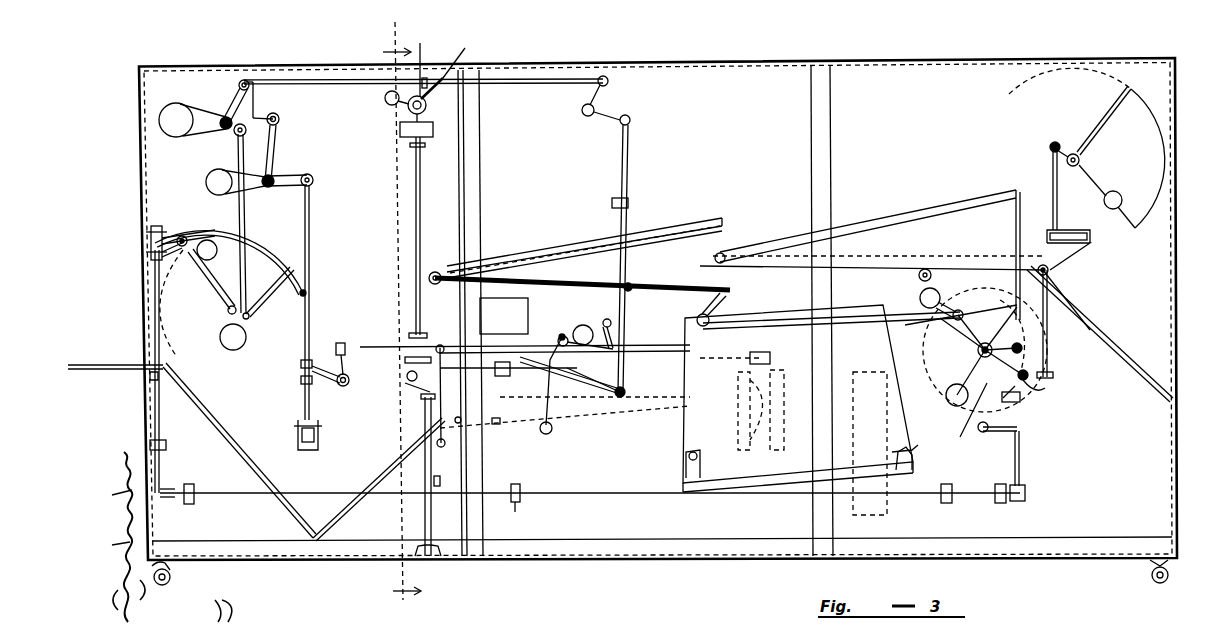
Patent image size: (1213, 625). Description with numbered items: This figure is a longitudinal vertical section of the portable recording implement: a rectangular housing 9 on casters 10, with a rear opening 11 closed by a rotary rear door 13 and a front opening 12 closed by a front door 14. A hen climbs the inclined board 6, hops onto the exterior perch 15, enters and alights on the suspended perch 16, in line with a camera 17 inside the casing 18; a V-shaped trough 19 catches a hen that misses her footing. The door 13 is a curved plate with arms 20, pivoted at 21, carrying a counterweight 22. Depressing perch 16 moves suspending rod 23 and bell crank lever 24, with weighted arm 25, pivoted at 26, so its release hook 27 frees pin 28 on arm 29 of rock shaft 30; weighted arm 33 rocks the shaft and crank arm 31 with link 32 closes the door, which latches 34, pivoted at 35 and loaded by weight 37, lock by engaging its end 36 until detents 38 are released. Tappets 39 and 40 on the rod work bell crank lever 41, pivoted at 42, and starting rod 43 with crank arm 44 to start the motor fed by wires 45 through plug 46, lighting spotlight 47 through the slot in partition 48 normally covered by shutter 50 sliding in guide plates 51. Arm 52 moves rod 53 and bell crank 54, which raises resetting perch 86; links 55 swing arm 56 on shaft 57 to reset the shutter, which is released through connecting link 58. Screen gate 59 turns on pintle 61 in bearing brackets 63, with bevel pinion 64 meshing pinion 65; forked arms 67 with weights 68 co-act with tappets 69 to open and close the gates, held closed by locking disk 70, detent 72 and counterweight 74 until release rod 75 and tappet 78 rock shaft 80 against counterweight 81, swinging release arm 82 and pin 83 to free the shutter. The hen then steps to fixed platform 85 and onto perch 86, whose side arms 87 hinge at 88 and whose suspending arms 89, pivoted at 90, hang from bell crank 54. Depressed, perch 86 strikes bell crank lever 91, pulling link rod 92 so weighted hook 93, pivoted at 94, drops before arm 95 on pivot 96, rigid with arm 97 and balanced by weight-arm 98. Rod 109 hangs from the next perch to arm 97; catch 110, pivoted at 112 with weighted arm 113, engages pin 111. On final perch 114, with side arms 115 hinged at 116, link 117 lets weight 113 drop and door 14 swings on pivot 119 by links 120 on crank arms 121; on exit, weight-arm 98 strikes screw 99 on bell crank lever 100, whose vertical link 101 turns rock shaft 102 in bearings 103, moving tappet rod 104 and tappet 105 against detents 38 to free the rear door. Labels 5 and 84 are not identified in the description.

The base rail 5 is at (662, 566).
The inclined board 6 is at (394, 311).
The cabinet or housing 9 is at (985, 60).
The casters 10 is at (172, 578).
The rear opening 11 is at (148, 353).
The front opening 12 is at (1168, 268).
The rear door 13 is at (285, 242).
The front door 14 is at (1160, 132).
The exterior platform or perch 15 is at (128, 373).
The suspended perch 16 is at (296, 428).
The camera 17 is at (703, 464).
The casing 18 is at (686, 425).
The V-shaped trough 19 is at (277, 507).
The arms 20 is at (214, 283).
The pivot 21 is at (227, 312).
The counterweight 22 is at (222, 345).
The suspending rod 23 is at (312, 312).
The bell crank lever 24 is at (274, 155).
The weighted arm 25 is at (206, 183).
The pivot 26 is at (280, 178).
The release hook 27 is at (280, 117).
The pin 28 is at (280, 122).
The arm 29 is at (256, 118).
The rock shaft 30 is at (221, 128).
The crank arm 31 is at (235, 135).
The link 32 is at (246, 216).
The weighted arm 33 is at (158, 122).
The latches 34 is at (210, 230).
The pivot 35 is at (181, 234).
The end of the door 36 is at (268, 293).
The weight 37 is at (214, 257).
The detents 38 is at (150, 258).
The tappet 39 is at (300, 364).
The tappet 40 is at (300, 380).
The bell crank lever 41 is at (336, 350).
The pivot 42 is at (343, 387).
The starting rod 43 is at (385, 345).
The crank arm 44 is at (748, 358).
The wires 45 is at (890, 513).
The plug 46 is at (904, 449).
The spotlight 47 is at (760, 445).
The partition 48 is at (424, 515).
The slide plate or shutter 50 is at (381, 479).
The guide plates 51 is at (441, 481).
The arm 52 is at (236, 98).
The rod 53 is at (498, 85).
The bell crank 54 is at (604, 118).
The links 55 is at (632, 182).
The arm 56 is at (596, 398).
The shaft 57 is at (443, 446).
The connecting link 58 is at (463, 421).
The screen gate 59 is at (500, 420).
The pintle 61 is at (414, 240).
The bearing brackets 63 is at (412, 338).
The bevel pinion 64 is at (427, 106).
The complementary pinion 65 is at (400, 129).
The forked arm 67 is at (466, 50).
The weight 68 is at (385, 100).
The tappets 69 is at (419, 58).
The locking disk 70 is at (404, 360).
The angular detent 72 is at (406, 377).
The counterweight 74 is at (420, 393).
The release rod 75 is at (664, 395).
The tappet 78 is at (556, 335).
The rock shaft 80 is at (584, 325).
The counterweight 81 is at (607, 323).
The release arm 82 is at (620, 345).
The pin 83 is at (575, 367).
The rod 84 is at (504, 377).
The fixed platform 85 is at (504, 316).
The resetting platform or perch 86 is at (712, 222).
The side arms 87 is at (532, 260).
The hinge 88 is at (428, 278).
The suspending arms 89 is at (612, 203).
The pivot 90 is at (612, 246).
The bell crank lever 91 is at (712, 314).
The link rod 92 is at (870, 318).
The weighted hook 93 is at (995, 265).
The pivot 94 is at (932, 270).
The arm or abutment 95 is at (963, 317).
The pivot 96 is at (978, 352).
The arm 97 is at (1035, 328).
The weight-arm 98 is at (946, 396).
The adjustable bolt or screw 99 is at (980, 431).
The bell crank lever 100 is at (1016, 401).
The vertical link 101 is at (1022, 446).
The rock shaft 102 is at (618, 496).
The bearings 103 is at (520, 498).
The tappet rod 104 is at (182, 460).
The tappet 105 is at (150, 232).
The rod 109 is at (1030, 213).
The catch 110 is at (1048, 356).
The pin 111 is at (1023, 348).
The pivot 112 is at (1045, 390).
The weighted arm 113 is at (1053, 375).
The final perch 114 is at (1092, 240).
The side arms 115 is at (1050, 272).
The hinge 116 is at (920, 299).
The link 117 is at (1070, 308).
The pivot 119 is at (1050, 153).
The links 120 is at (1073, 168).
The crank arms 121 is at (1057, 142).